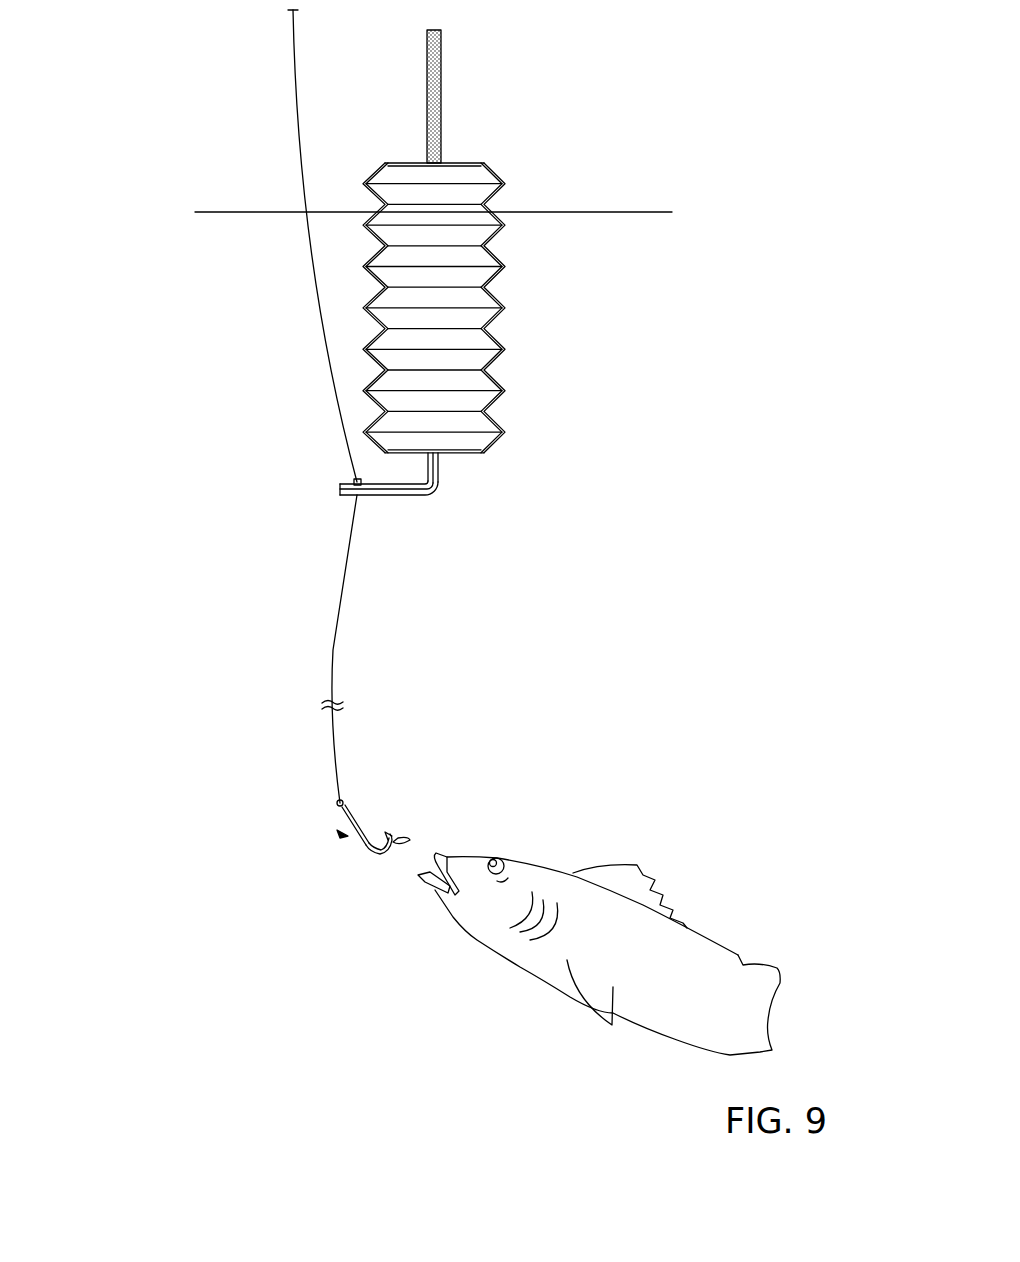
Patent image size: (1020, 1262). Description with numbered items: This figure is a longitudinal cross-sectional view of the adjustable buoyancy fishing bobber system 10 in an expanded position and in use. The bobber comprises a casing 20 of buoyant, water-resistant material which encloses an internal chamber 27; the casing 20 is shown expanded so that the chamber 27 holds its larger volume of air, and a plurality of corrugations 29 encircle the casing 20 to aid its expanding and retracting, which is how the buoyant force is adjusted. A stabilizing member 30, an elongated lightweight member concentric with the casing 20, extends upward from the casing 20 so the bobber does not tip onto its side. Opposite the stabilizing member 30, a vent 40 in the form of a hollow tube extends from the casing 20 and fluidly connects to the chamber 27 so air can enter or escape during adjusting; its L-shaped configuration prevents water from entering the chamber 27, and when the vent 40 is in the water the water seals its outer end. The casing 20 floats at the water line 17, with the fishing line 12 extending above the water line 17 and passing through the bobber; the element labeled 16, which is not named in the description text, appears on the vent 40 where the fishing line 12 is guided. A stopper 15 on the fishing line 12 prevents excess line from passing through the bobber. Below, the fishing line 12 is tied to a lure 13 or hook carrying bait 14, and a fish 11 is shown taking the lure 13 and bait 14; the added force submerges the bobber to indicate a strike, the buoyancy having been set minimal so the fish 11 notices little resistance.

The adjustable buoyancy fishing bobber system 10 is at (655, 82).
The fish 11 is at (490, 948).
The fishing line 12 is at (293, 92).
The lure 13 is at (350, 813).
The bait 14 is at (337, 830).
The stopper 15 is at (357, 480).
The tube 16 is at (438, 463).
The water line 17 is at (227, 212).
The casing 20 is at (540, 308).
The chamber 27 is at (455, 299).
The corrugations 29 is at (497, 338).
The stabilizing member 30 is at (441, 55).
The vent 40 is at (413, 495).